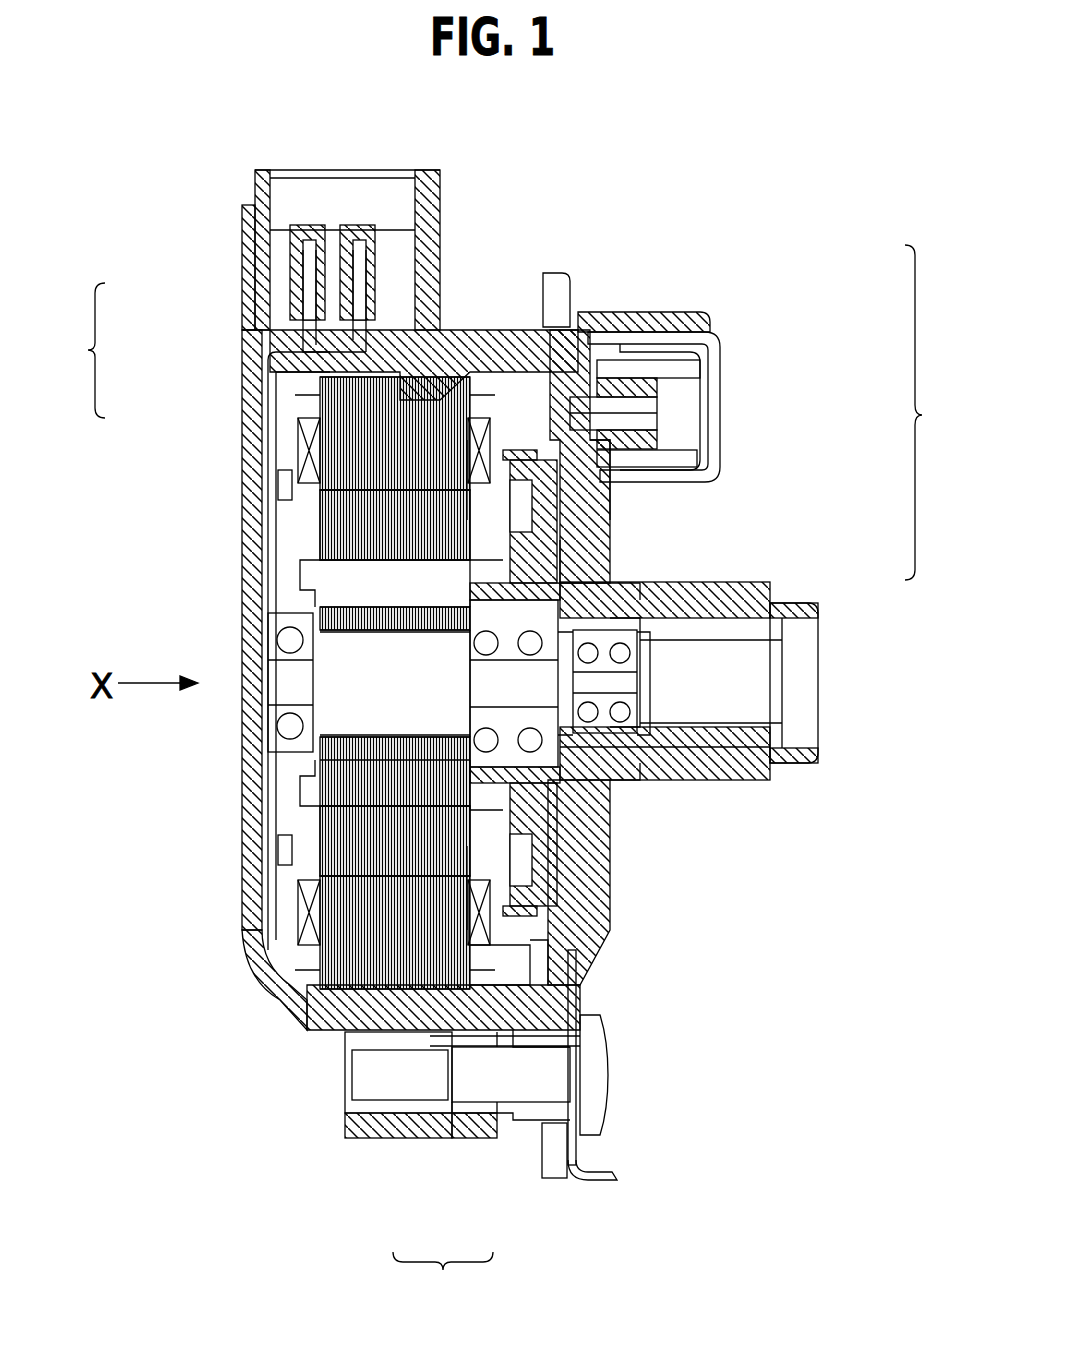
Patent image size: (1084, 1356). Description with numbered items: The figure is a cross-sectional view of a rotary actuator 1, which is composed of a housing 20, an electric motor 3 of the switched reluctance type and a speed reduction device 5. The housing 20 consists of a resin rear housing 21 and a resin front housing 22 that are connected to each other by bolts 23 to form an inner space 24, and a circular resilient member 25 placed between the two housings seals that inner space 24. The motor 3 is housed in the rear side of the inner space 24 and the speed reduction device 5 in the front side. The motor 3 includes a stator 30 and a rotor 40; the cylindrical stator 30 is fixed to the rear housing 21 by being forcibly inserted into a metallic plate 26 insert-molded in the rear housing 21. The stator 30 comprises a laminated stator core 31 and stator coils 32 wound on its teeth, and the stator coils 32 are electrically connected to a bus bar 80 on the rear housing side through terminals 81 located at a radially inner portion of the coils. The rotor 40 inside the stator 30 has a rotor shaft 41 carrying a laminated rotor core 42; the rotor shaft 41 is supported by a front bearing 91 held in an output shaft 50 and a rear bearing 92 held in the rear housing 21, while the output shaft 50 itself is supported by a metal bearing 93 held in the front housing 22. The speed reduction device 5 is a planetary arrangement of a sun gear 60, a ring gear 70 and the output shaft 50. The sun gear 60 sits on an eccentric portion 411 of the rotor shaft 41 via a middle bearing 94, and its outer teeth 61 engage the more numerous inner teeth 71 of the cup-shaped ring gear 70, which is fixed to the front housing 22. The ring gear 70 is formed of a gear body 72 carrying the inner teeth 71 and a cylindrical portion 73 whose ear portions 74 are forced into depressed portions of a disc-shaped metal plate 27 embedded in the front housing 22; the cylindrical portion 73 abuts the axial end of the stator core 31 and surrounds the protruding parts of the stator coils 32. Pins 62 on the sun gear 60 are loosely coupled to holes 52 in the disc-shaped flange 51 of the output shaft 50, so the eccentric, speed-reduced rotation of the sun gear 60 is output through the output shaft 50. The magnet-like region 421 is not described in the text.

The rotary actuator 1 is at (560, 226).
The electric motor 3 is at (279, 636).
The speed reduction device 5 is at (742, 618).
The housing 20 is at (422, 1211).
The rear housing 21 is at (402, 1140).
The front housing 22 is at (475, 1140).
The bolts 23 is at (608, 1085).
The inner space 24 is at (485, 825).
The resilient member 25 is at (375, 1020).
The metallic plate 26 is at (310, 1005).
The metal plate 27 is at (497, 1050).
The stator 30 is at (255, 345).
The stator core 31 is at (300, 405).
The stator coils 32 is at (298, 440).
The rotor 40 is at (262, 488).
The rotor shaft 41 is at (345, 700).
The rotor core 42 is at (320, 790).
The output shaft 50 is at (738, 604).
The flange 51 is at (600, 560).
The holes 52 is at (580, 520).
The sun gear 60 is at (618, 582).
The outer teeth 61 is at (590, 420).
The pins 62 is at (580, 500).
The ring gear 70 is at (600, 345).
The inner teeth 71 is at (545, 1000).
The gear body 72 is at (490, 950).
The cylindrical portion 73 is at (555, 965).
The ear portions 74 is at (535, 1020).
The bus bar 80 is at (268, 895).
The terminals 81 is at (280, 488).
The front bearing 91 is at (620, 790).
The rear bearing 92 is at (285, 612).
The metal bearing 93 is at (520, 765).
The middle bearing 94 is at (585, 800).
The eccentric portion 411 is at (650, 690).
The magnet 421 is at (320, 546).